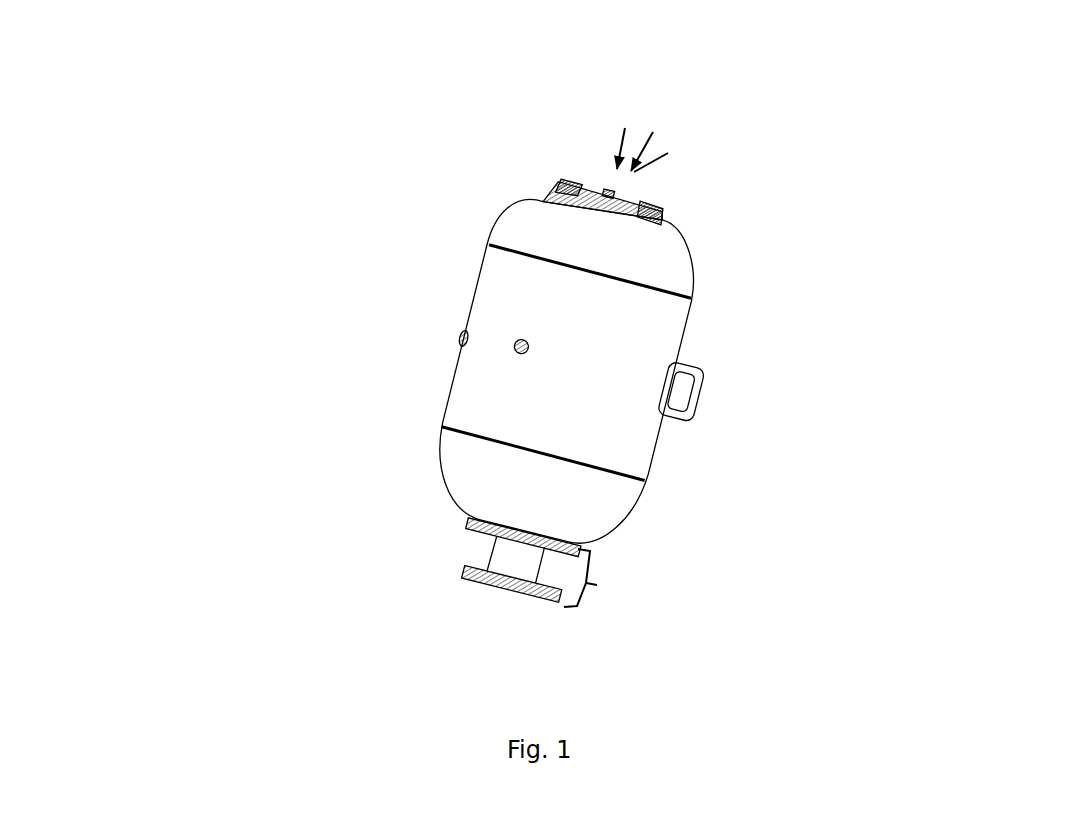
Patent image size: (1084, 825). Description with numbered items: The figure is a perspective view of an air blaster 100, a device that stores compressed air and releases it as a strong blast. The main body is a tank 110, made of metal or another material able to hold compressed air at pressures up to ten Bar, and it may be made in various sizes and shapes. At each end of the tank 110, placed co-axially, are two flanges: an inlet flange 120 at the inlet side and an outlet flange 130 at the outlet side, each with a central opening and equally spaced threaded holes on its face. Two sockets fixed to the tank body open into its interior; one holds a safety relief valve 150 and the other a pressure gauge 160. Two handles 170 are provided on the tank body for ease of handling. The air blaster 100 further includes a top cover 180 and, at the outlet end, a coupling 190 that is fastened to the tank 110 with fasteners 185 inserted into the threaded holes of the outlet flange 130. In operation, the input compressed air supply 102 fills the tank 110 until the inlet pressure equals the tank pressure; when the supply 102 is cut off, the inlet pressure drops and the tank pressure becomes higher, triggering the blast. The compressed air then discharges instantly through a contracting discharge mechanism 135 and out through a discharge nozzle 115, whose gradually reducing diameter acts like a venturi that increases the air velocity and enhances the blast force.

The air blaster 100 is at (122, 136).
The input compressed air supply 102 is at (663, 108).
The tank 110 is at (670, 262).
The discharge nozzle 115 is at (512, 617).
The inlet flange 120 is at (656, 202).
The outlet flange 130 is at (572, 539).
The contracting discharge mechanism 135 is at (611, 600).
The safety relief valve 150 is at (505, 328).
The pressure gauge 160 is at (446, 329).
The handles 170 is at (710, 393).
The top cover 180 is at (546, 182).
The fasteners 185 is at (577, 180).
The coupling 190 is at (481, 562).